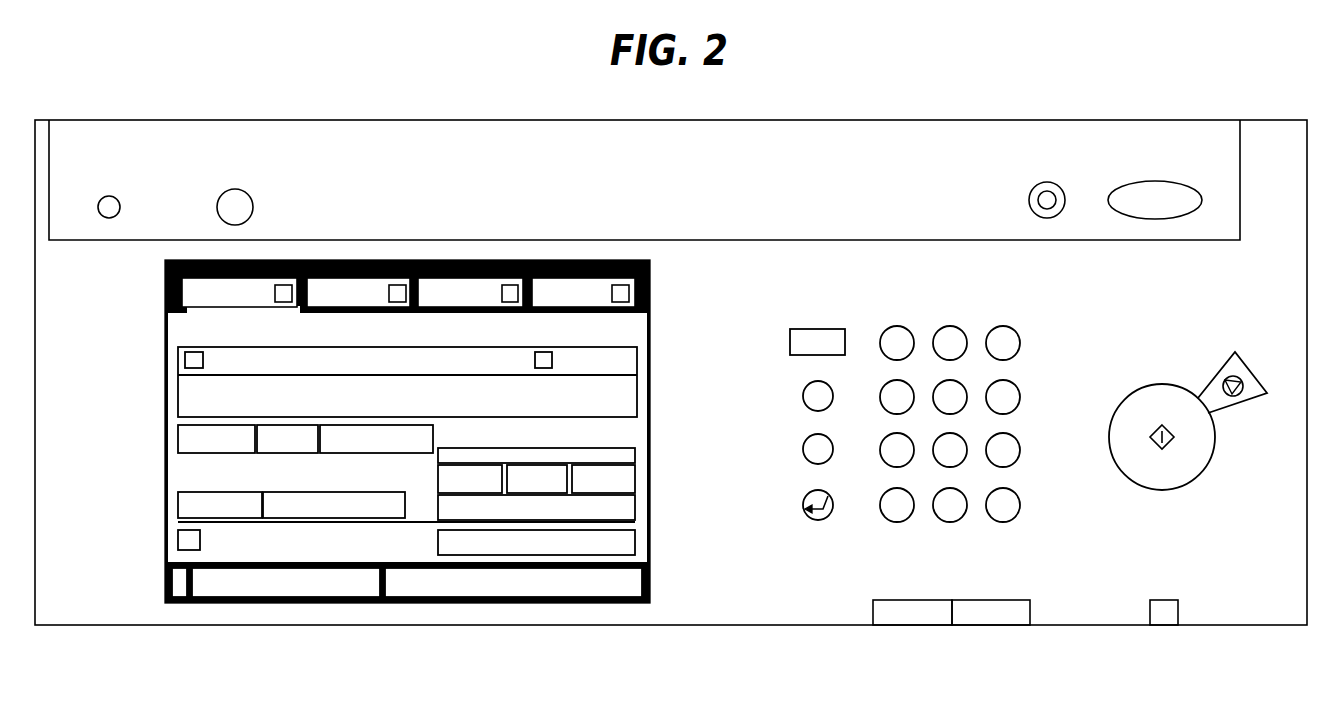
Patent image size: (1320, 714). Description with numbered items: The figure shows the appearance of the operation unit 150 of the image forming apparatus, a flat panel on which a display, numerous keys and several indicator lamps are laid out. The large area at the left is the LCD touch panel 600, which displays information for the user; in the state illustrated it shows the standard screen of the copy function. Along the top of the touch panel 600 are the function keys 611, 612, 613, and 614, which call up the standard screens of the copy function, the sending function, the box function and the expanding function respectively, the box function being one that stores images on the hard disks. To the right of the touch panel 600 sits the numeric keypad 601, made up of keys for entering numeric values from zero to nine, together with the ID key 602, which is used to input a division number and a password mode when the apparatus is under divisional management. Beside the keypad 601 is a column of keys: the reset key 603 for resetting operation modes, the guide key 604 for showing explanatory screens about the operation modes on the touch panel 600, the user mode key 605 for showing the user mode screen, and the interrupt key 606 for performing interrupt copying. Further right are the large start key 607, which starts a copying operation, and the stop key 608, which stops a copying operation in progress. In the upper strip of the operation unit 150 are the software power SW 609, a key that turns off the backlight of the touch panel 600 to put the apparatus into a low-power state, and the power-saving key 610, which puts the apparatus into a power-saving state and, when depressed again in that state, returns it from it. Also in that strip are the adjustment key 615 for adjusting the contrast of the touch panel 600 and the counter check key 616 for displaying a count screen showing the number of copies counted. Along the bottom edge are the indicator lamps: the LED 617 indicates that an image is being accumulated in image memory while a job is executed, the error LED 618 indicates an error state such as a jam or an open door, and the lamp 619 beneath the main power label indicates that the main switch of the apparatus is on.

The operation unit 150 is at (148, 626).
The LCD touch panel 600 is at (408, 441).
The numeric keypad 601 is at (916, 312).
The ID key 602 is at (882, 516).
The reset key 603 is at (790, 343).
The guide key 604 is at (803, 396).
The user mode key 605 is at (803, 449).
The interrupt key 606 is at (803, 505).
The start key 607 is at (1162, 490).
The stop key 608 is at (1243, 405).
The software power SW 609 is at (1153, 219).
The power-saving key 610 is at (1047, 218).
The function key 611 is at (262, 287).
The function key 612 is at (372, 287).
The function key 613 is at (497, 286).
The function key 614 is at (590, 284).
The adjustment key 615 is at (217, 207).
The counter check key 616 is at (109, 218).
The LED 617 is at (912, 612).
The error LED 618 is at (990, 612).
The main power lamp 619 is at (1163, 612).